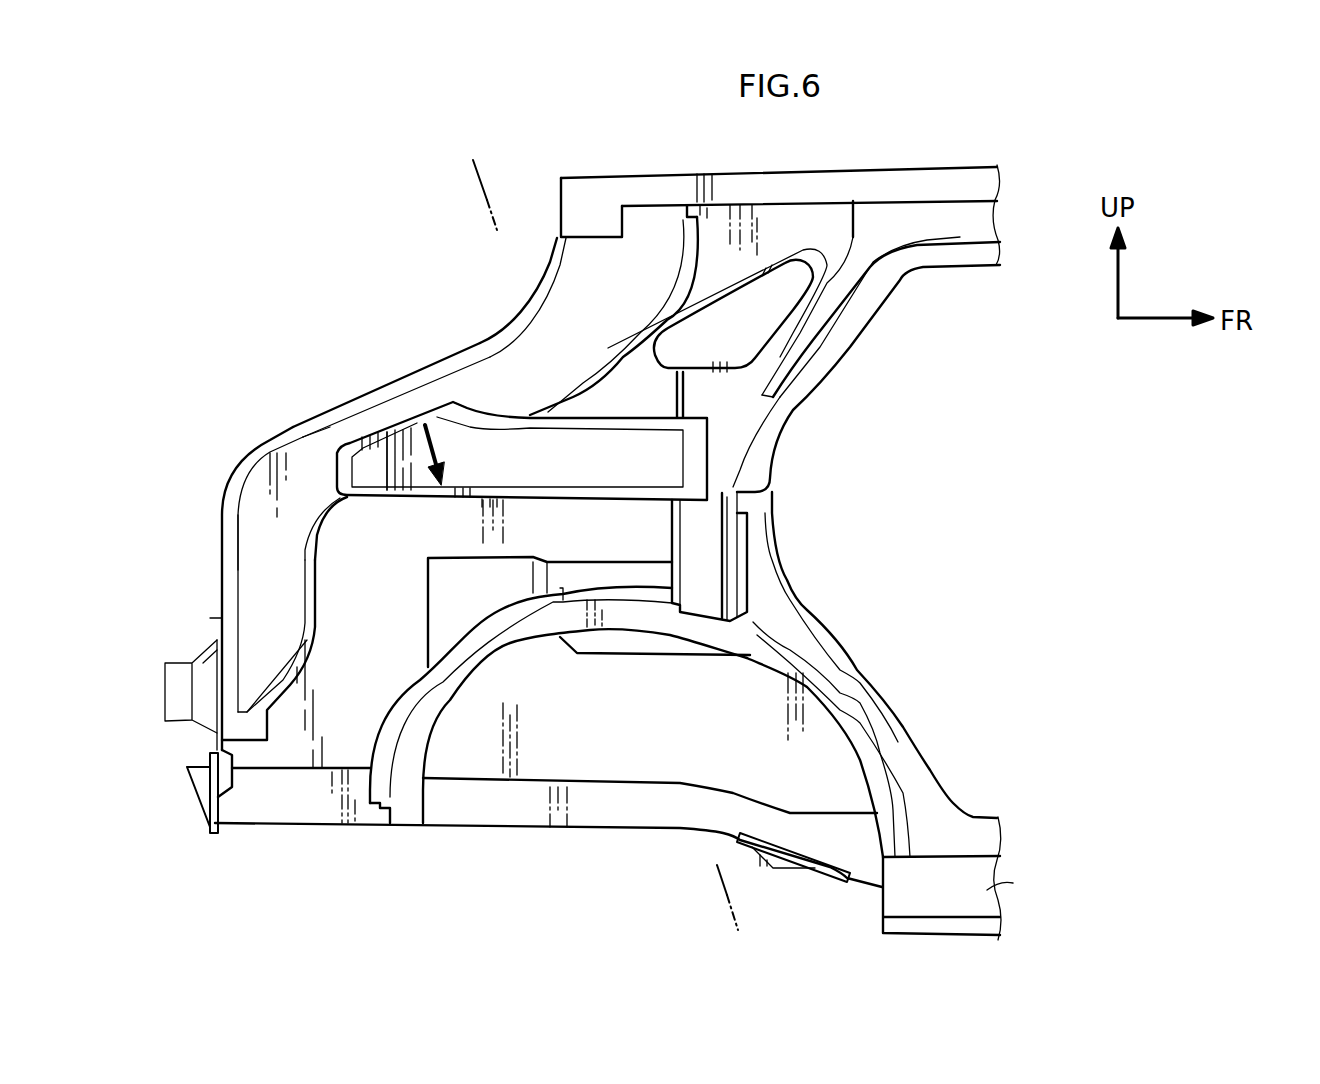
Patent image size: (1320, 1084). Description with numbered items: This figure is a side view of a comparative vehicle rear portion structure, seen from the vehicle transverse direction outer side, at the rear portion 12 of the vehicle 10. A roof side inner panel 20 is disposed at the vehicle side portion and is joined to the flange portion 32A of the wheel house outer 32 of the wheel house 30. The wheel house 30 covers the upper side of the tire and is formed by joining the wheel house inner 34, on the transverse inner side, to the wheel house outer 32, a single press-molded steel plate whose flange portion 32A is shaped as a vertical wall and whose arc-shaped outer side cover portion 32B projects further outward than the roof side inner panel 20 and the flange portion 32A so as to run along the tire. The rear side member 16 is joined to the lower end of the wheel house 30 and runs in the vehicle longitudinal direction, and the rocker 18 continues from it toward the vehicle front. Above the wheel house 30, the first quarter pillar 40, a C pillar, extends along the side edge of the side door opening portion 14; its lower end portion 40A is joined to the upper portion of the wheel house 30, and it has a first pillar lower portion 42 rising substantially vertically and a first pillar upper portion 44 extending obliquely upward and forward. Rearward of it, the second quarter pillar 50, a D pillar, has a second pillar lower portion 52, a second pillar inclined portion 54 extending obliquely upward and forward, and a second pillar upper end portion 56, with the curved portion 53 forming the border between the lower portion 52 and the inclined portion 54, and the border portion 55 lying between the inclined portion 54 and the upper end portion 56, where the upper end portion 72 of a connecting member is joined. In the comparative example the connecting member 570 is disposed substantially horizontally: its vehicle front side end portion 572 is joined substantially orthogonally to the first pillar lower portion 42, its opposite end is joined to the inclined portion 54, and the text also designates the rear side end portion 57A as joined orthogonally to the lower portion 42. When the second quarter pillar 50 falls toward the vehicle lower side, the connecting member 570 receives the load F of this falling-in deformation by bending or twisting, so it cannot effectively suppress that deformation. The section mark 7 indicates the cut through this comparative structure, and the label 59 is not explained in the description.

The section line VII-VII 7 is at (485, 184).
The vehicle 10 is at (1072, 131).
The rear portion 12 is at (886, 154).
The side door opening portion 14 is at (953, 366).
The rear side member 16 is at (537, 813).
The rocker 18 is at (990, 887).
The roof side inner panel 20 is at (373, 530).
The wheel house 30 is at (643, 693).
The wheel house outer 32 is at (527, 633).
The flange portion 32A is at (443, 615).
The outer side cover portion 32B is at (477, 667).
The wheel house inner 34 is at (627, 767).
The first quarter pillar 40 is at (720, 404).
The lower end portion 40A is at (712, 588).
The first pillar lower portion 42 is at (723, 443).
The first pillar upper portion 44 is at (820, 307).
The second quarter pillar 50 is at (305, 427).
The second pillar lower portion 52 is at (253, 547).
The curved portion 53 is at (253, 490).
The second pillar inclined portion 54 is at (433, 393).
The border portion 55 is at (538, 357).
The second pillar upper end portion 56 is at (580, 258).
The vehicle rear side end portion 57A is at (740, 493).
The bent portion 59 is at (307, 460).
The connecting member 570 is at (494, 443).
The vehicle front side end portion 572 is at (380, 463).
The upper end portion 72 is at (580, 372).
The load F is at (440, 450).